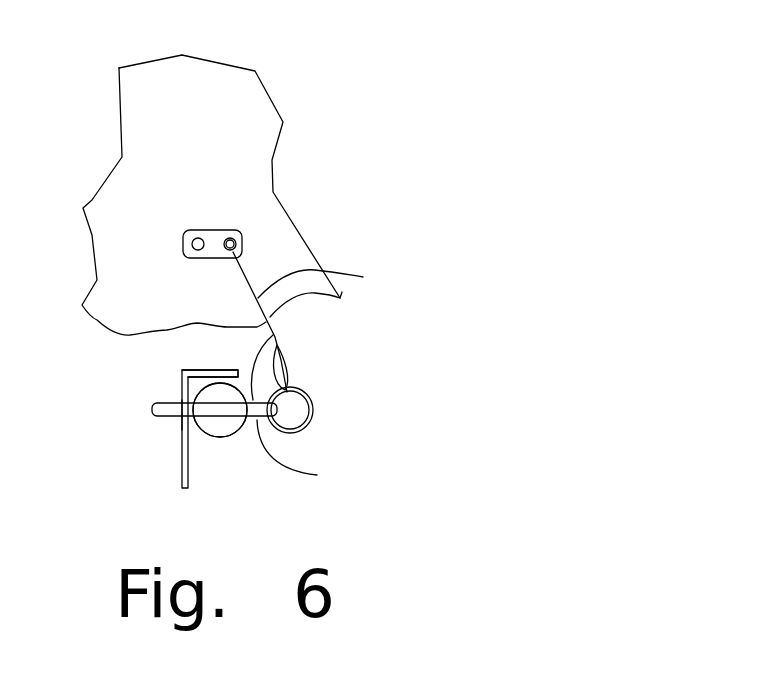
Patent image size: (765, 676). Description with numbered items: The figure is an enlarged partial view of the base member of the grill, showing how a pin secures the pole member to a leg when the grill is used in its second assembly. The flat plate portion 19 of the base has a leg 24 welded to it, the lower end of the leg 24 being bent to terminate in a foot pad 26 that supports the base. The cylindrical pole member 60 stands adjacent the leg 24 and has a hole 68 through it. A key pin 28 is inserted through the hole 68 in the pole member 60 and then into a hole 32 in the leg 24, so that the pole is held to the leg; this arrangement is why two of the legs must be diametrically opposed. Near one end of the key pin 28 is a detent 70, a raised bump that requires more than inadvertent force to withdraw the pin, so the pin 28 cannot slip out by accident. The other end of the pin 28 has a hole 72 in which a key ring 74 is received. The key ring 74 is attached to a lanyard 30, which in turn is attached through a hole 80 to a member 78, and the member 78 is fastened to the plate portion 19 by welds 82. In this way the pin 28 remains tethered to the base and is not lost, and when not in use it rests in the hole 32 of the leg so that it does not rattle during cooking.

The flat plate portion 19 is at (215, 123).
The leg 24 is at (182, 473).
The foot pad 26 is at (212, 370).
The key pin 28 is at (273, 337).
The lanyard 30 is at (336, 288).
The hole 32 is at (187, 417).
The pole member 60 is at (240, 430).
The hole 68 is at (212, 418).
The detent 70 is at (163, 402).
The hole 72 is at (312, 417).
The key ring 74 is at (315, 408).
The member 78 is at (218, 227).
The hole 80 is at (240, 231).
The welds 82 is at (193, 222).